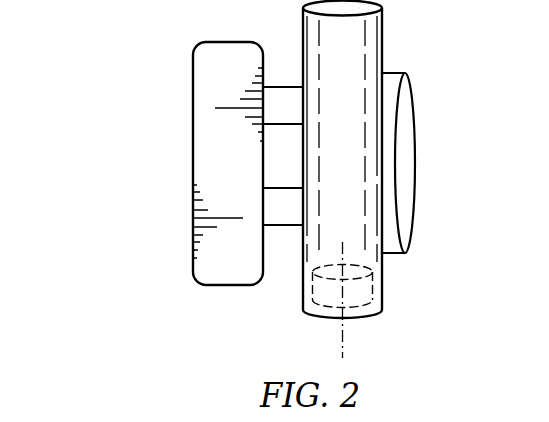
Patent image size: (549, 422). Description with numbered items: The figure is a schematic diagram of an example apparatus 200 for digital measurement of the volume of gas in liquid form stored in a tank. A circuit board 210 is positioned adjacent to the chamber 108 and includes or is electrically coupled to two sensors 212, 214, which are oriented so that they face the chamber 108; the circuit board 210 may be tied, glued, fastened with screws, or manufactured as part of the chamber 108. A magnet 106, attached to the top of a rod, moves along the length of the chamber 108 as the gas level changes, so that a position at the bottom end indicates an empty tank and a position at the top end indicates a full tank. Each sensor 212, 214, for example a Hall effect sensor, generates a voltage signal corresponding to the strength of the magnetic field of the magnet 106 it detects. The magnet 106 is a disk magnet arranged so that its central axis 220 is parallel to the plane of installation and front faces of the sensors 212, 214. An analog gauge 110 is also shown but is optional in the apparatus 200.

The apparatus 200 is at (104, 18).
The circuit board 210 is at (193, 103).
The sensor 212 is at (283, 87).
The sensor 214 is at (283, 227).
The chamber 108 is at (383, 34).
The analog gauge 110 is at (415, 103).
The magnet 106 is at (373, 282).
The central axis 220 is at (344, 340).